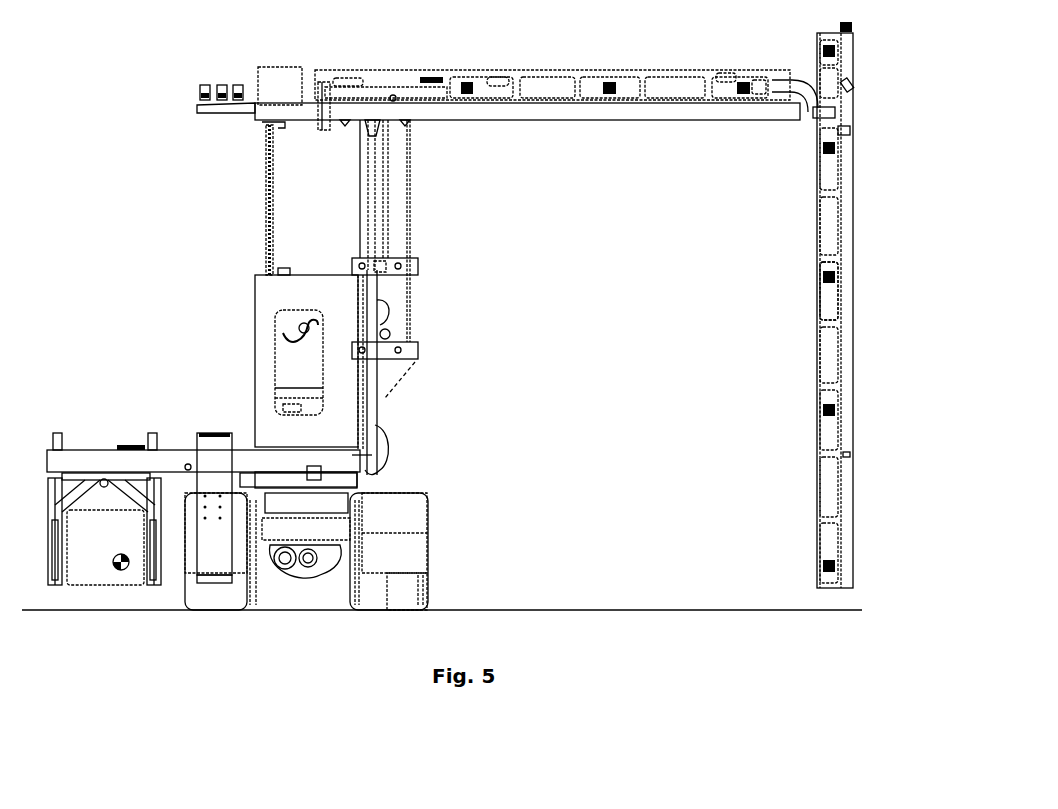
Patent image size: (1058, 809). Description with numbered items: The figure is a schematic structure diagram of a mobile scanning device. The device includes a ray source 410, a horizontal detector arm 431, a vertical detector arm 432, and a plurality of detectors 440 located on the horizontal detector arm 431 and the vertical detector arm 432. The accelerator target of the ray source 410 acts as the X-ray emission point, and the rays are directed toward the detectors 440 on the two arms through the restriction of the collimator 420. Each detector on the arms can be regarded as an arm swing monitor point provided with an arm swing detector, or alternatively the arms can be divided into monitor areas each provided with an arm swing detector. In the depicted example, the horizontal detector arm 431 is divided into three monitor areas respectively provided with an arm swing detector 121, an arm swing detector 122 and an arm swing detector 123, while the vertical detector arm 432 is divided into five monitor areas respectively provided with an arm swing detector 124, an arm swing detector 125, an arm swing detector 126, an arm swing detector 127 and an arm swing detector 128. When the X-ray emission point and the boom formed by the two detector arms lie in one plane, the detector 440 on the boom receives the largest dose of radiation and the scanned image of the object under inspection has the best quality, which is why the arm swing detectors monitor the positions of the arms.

The horizontal detector arm 431 is at (430, 112).
The vertical detector arm 432 is at (846, 477).
The detectors 440 is at (545, 85).
The arm swing detector 121 is at (463, 75).
The arm swing detector 122 is at (609, 80).
The arm swing detector 123 is at (740, 78).
The arm swing detector 124 is at (838, 51).
The arm swing detector 125 is at (838, 148).
The arm swing detector 126 is at (838, 277).
The arm swing detector 127 is at (838, 410).
The arm swing detector 128 is at (838, 566).
The ray source 410 is at (102, 520).
The collimator 420 is at (213, 470).